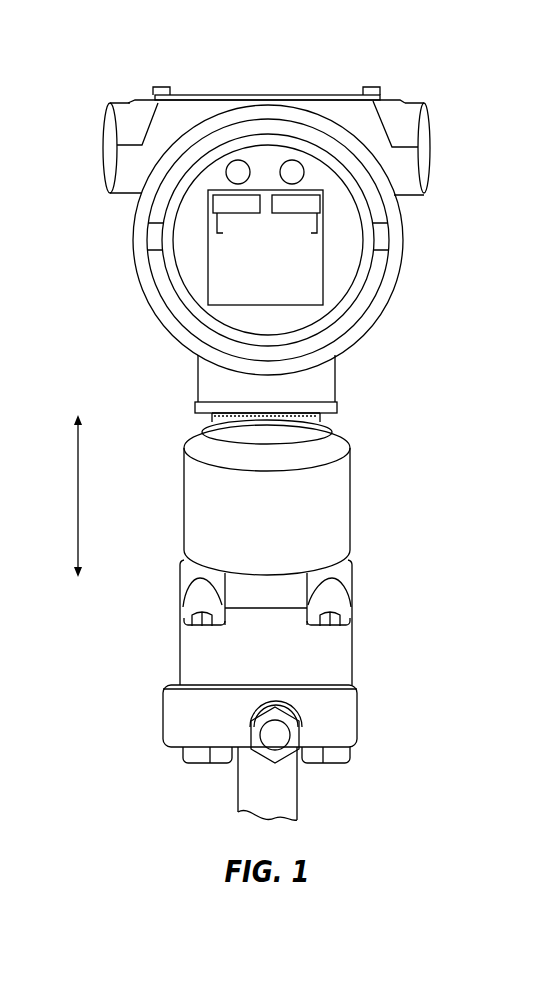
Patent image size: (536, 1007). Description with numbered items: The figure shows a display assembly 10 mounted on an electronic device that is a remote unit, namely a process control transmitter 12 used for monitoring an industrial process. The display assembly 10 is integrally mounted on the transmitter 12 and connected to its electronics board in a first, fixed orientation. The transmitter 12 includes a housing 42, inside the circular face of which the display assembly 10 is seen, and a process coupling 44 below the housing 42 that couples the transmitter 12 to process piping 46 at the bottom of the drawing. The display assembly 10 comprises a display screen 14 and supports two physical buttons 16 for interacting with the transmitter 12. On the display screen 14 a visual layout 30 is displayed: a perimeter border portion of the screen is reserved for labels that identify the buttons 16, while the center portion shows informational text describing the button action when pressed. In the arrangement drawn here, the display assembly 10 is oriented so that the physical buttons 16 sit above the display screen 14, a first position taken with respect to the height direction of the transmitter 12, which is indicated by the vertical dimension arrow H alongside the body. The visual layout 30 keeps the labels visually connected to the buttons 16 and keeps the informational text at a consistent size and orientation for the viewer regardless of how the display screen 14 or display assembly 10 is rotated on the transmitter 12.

The display assembly 10 is at (213, 318).
The transmitter 12 is at (174, 58).
The display screen 14 is at (347, 265).
The physical buttons 16 is at (295, 161).
The visual layout 30 is at (208, 259).
The housing 42 is at (128, 208).
The process coupling 44 is at (180, 655).
The process piping 46 is at (238, 794).
The height dimension H is at (68, 496).